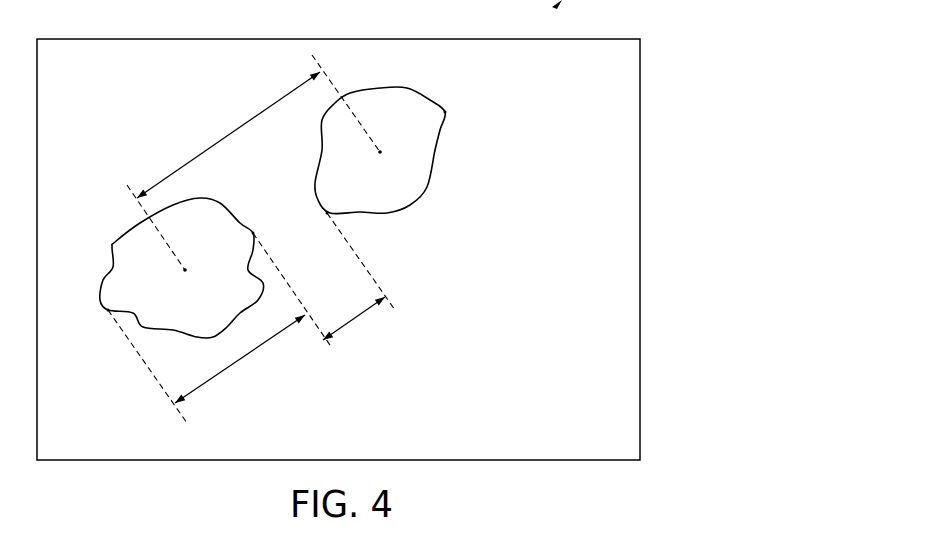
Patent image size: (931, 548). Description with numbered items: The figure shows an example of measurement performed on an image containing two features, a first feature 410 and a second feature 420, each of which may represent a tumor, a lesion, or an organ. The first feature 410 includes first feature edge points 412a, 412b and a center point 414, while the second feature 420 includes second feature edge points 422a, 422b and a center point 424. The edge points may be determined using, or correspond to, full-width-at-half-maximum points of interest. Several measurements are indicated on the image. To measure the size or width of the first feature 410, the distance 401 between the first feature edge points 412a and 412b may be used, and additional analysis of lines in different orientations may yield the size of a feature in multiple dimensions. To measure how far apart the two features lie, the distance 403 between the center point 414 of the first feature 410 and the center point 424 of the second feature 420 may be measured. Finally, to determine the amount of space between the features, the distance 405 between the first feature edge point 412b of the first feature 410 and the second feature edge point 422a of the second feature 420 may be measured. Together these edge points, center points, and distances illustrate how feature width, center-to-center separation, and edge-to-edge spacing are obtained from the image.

The distance 401 is at (243, 353).
The distance 403 is at (230, 132).
The distance 405 is at (357, 320).
The first feature 410 is at (123, 235).
The first feature edge point 412a is at (108, 310).
The first feature edge point 412b is at (252, 233).
The center point 414 is at (185, 270).
The second feature 420 is at (407, 83).
The second feature edge point 422a is at (327, 213).
The second feature edge point 422b is at (445, 112).
The center point 424 is at (380, 152).